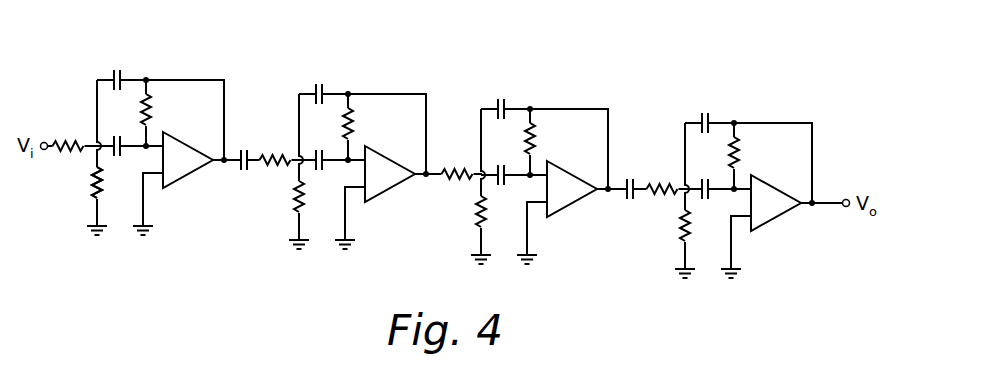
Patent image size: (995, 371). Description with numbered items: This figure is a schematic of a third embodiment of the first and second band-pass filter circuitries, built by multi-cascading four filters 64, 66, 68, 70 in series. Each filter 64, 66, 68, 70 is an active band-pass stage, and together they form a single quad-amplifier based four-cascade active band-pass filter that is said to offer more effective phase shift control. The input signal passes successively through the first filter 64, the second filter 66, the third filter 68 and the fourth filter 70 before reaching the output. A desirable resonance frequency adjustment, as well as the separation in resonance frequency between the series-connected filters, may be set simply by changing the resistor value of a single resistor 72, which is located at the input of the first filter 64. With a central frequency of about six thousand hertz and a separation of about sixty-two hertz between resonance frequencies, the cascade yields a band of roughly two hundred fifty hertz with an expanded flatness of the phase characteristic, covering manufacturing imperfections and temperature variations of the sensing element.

The filter 64 is at (172, 124).
The filter 66 is at (375, 137).
The filter 68 is at (569, 152).
The filter 70 is at (773, 166).
The single resistor 72 is at (89, 189).